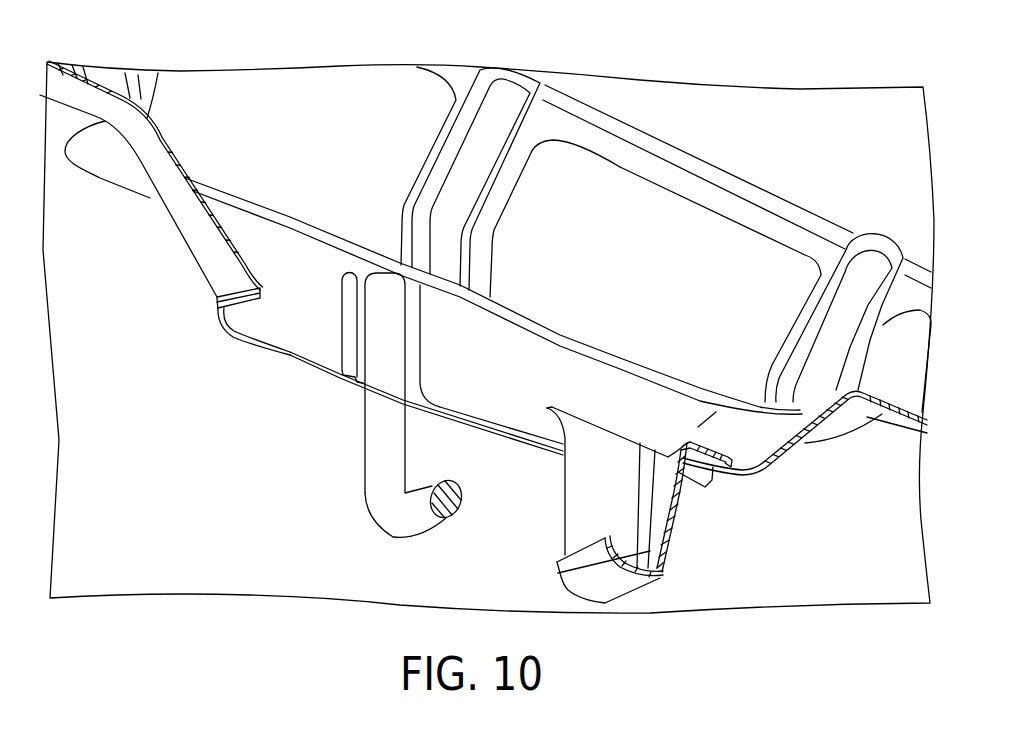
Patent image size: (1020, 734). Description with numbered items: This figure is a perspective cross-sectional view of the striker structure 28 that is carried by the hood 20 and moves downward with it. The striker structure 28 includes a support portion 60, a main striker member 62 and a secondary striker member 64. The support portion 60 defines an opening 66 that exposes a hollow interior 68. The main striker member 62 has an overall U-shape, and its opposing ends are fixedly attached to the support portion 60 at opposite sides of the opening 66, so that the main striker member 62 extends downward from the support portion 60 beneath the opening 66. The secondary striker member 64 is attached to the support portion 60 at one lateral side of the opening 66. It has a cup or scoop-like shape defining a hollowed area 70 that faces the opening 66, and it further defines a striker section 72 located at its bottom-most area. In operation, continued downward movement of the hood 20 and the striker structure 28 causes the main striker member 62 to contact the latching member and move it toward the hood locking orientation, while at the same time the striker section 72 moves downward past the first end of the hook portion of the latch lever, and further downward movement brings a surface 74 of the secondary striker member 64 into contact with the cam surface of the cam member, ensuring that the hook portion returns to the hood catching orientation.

The hood 20 is at (690, 115).
The striker structure 28 is at (190, 278).
The support portion 60 is at (190, 221).
The main striker member 62 is at (377, 493).
The secondary striker member 64 is at (597, 490).
The opening 66 is at (300, 365).
The hollow interior 68 is at (290, 308).
The hollowed area 70 is at (580, 537).
The striker section 72 is at (575, 573).
The surface 74 is at (645, 597).